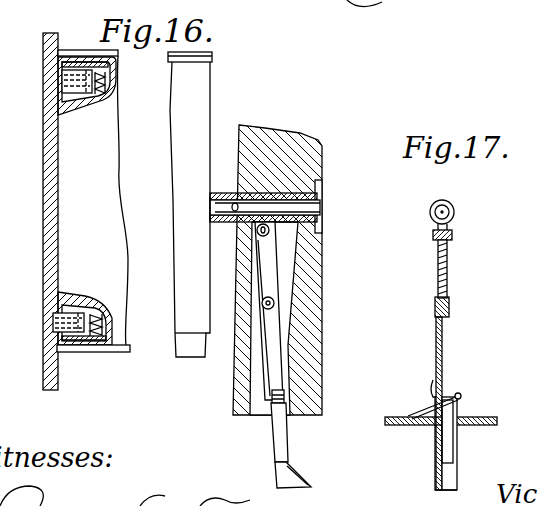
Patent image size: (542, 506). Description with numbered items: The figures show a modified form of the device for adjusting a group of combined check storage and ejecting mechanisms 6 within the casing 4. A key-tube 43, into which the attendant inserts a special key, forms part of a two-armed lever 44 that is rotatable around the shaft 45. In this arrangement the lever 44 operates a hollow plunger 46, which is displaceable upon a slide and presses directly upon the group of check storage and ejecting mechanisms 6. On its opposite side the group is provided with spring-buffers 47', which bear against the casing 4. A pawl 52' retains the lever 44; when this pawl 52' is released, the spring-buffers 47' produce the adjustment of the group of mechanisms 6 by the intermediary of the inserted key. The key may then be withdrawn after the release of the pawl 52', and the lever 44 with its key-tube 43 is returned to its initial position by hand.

In FIG. 16, the casing 4 is at (44, 280).
In FIG. 16, the combined check storage and ejecting mechanism 6 is at (110, 205).
In FIG. 16, the key-tube 43 is at (309, 445).
In FIG. 17, the key-tube 43 is at (450, 477).
In FIG. 16, the two-armed lever 44 is at (276, 311).
In FIG. 17, the two-armed lever 44 is at (448, 275).
In FIG. 16, the shaft 45 is at (262, 303).
In FIG. 16, the piston 46 is at (265, 183).
In FIG. 17, the piston 46 is at (453, 210).
In FIG. 16, the spring-buffer 47' is at (91, 217).
In FIG. 16, the pawl 52' is at (320, 382).
In FIG. 17, the pawl 52' is at (455, 399).